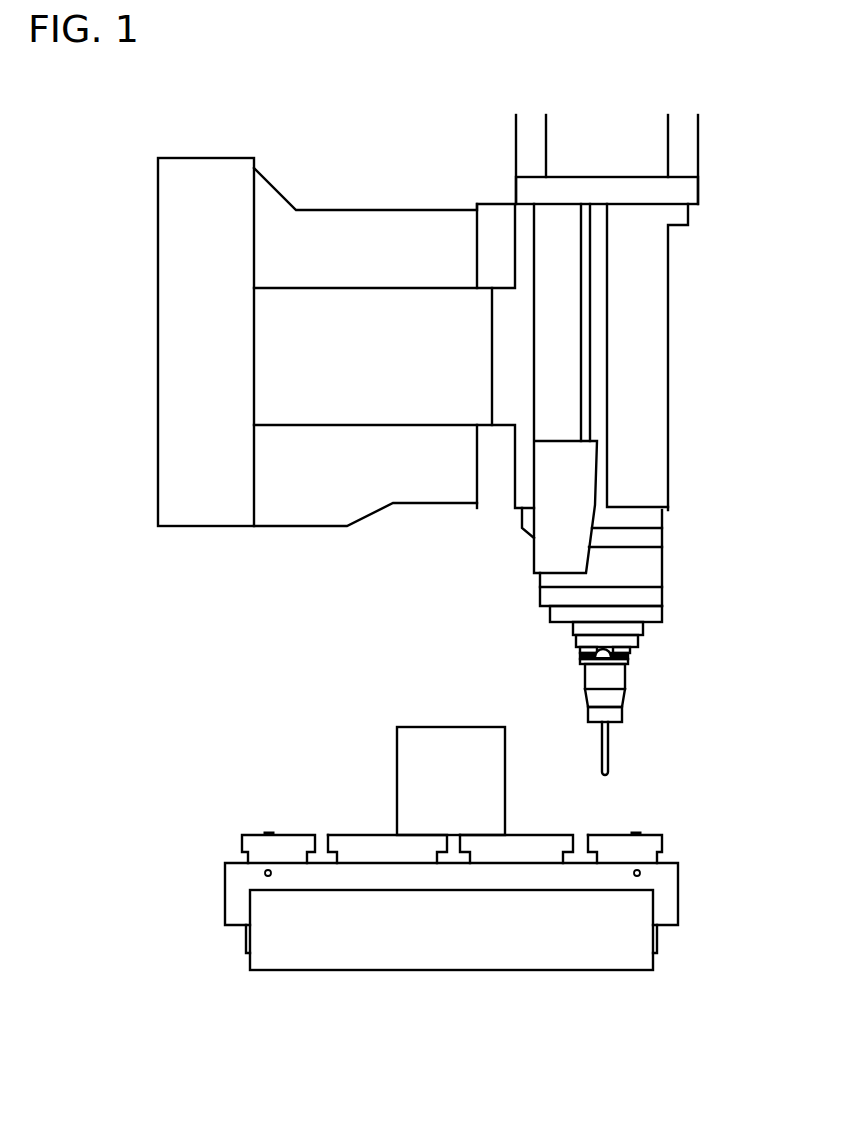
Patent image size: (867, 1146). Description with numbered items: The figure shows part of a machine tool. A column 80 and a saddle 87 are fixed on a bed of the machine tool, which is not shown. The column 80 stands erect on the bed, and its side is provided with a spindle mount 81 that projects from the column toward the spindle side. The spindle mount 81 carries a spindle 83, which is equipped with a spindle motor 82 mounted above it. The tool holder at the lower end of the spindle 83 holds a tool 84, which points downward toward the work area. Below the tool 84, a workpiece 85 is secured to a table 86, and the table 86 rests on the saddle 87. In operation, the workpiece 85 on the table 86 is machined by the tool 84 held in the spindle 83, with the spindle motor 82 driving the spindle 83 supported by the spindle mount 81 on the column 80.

The column 80 is at (203, 158).
The spindle mount 81 is at (368, 210).
The spindle motor 82 is at (698, 145).
The spindle 83 is at (552, 597).
The tool 84 is at (592, 695).
The workpiece 85 is at (405, 760).
The table 86 is at (678, 883).
The saddle 87 is at (655, 970).